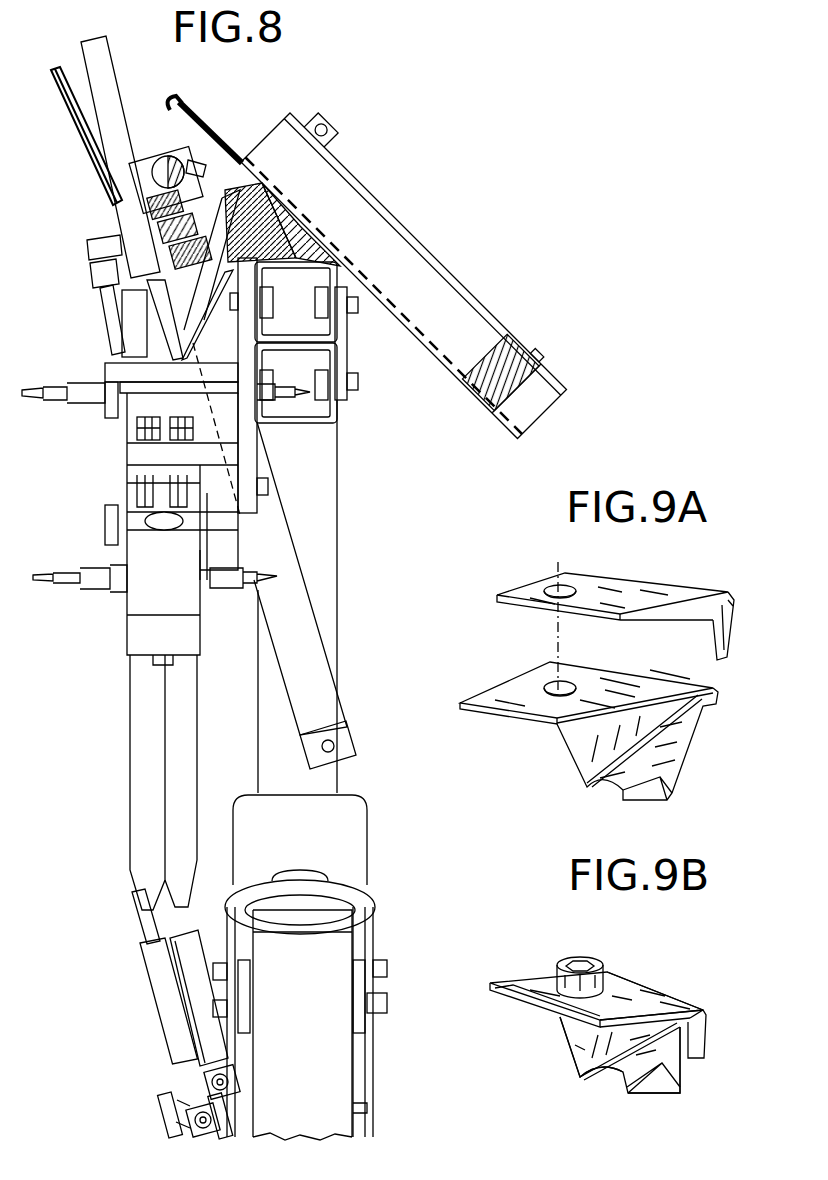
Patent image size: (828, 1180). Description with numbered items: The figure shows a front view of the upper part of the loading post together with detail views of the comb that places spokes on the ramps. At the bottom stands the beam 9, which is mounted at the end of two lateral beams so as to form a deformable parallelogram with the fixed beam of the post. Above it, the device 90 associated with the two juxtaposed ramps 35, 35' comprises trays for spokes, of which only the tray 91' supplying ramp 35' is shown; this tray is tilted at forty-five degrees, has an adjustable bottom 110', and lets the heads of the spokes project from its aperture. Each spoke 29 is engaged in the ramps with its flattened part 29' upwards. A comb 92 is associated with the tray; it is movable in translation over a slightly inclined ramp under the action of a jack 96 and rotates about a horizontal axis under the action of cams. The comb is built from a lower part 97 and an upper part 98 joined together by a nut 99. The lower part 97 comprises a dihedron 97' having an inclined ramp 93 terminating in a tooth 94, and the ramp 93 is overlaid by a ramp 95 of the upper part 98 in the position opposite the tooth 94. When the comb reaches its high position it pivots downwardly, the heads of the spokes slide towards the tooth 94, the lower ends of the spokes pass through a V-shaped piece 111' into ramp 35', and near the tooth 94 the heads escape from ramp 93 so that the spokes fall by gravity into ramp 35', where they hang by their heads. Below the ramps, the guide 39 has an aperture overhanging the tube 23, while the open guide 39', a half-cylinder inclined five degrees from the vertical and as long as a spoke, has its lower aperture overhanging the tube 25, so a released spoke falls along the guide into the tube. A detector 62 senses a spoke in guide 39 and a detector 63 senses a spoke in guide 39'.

In FIG. 8, the device 90 is at (138, 118).
In FIG. 8, the flattened part 29' is at (163, 89).
In FIG. 8, the spoke 29 is at (259, 175).
In FIG. 8, the comb 92 is at (199, 156).
In FIG. 9A, the comb 92 is at (487, 622).
In FIG. 9B, the comb 92 is at (637, 972).
In FIG. 8, the tray 91' is at (404, 276).
In FIG. 8, the adjustable bottom 110' is at (547, 373).
In FIG. 8, the V-shaped piece 111' is at (142, 275).
In FIG. 8, the ramp 35 is at (116, 437).
In FIG. 8, the ramp 35' is at (241, 437).
In FIG. 8, the detector 62 is at (97, 566).
In FIG. 8, the detector 63 is at (234, 576).
In FIG. 8, the jack 96 is at (303, 642).
In FIG. 8, the guide 39 is at (120, 782).
In FIG. 8, the open guide 39' is at (210, 781).
In FIG. 8, the tube 23 is at (157, 965).
In FIG. 8, the tube 25 is at (192, 988).
In FIG. 8, the beam 9 is at (330, 1070).
In FIG. 9A, the upper part 98 is at (641, 597).
In FIG. 9B, the upper part 98 is at (657, 1003).
In FIG. 9A, the ramp 95 is at (713, 641).
In FIG. 9B, the ramp 95 is at (690, 1045).
In FIG. 9A, the lower part 97 is at (575, 683).
In FIG. 9B, the lower part 97 is at (585, 968).
In FIG. 9A, the dihedron 97' is at (621, 741).
In FIG. 9B, the dihedron 97' is at (614, 1067).
In FIG. 9A, the inclined ramp 93 is at (693, 735).
In FIG. 9B, the inclined ramp 93 is at (683, 1072).
In FIG. 9A, the tooth 94 is at (653, 801).
In FIG. 9B, the tooth 94 is at (650, 1098).
In FIG. 9B, the nut 99 is at (593, 962).